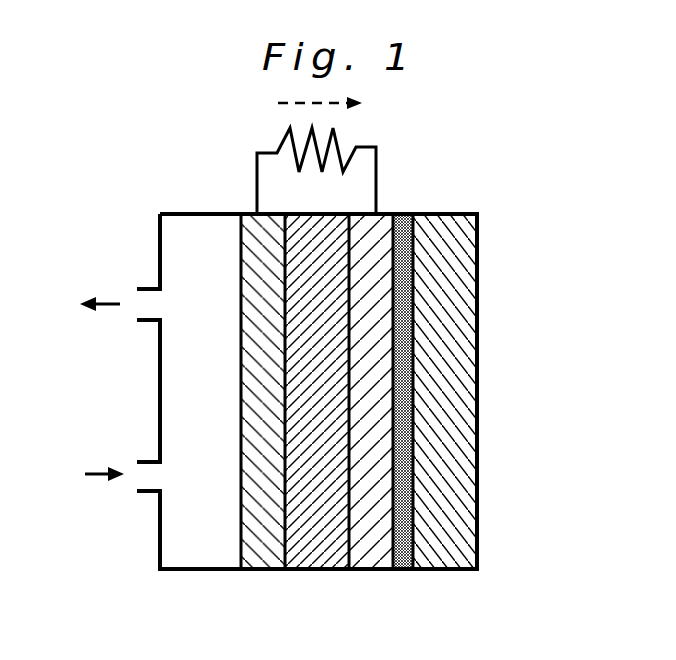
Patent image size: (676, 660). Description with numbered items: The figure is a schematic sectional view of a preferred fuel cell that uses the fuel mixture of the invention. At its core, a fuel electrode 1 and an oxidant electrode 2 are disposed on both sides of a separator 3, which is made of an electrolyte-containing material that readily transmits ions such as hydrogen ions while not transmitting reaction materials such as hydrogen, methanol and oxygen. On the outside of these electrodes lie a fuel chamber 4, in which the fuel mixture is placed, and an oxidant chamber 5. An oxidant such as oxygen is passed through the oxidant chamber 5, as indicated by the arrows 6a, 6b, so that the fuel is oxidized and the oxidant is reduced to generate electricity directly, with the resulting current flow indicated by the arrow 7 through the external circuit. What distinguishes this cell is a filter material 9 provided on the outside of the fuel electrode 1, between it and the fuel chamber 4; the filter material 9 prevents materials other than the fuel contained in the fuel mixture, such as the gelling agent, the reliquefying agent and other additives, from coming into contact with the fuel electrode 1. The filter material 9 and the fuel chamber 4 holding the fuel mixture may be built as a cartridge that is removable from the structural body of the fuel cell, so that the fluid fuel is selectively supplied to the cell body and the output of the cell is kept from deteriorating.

The fuel electrode 1 is at (367, 553).
The oxidant electrode 2 is at (262, 557).
The separator 3 is at (310, 557).
The fuel chamber 4 is at (471, 462).
The oxidant chamber 5 is at (202, 557).
The arrow (oxidant inlet flow) 6a is at (96, 476).
The arrow (oxidant outlet flow) 6b is at (110, 306).
The arrow (current flow) 7 is at (352, 107).
The filter material 9 is at (405, 569).